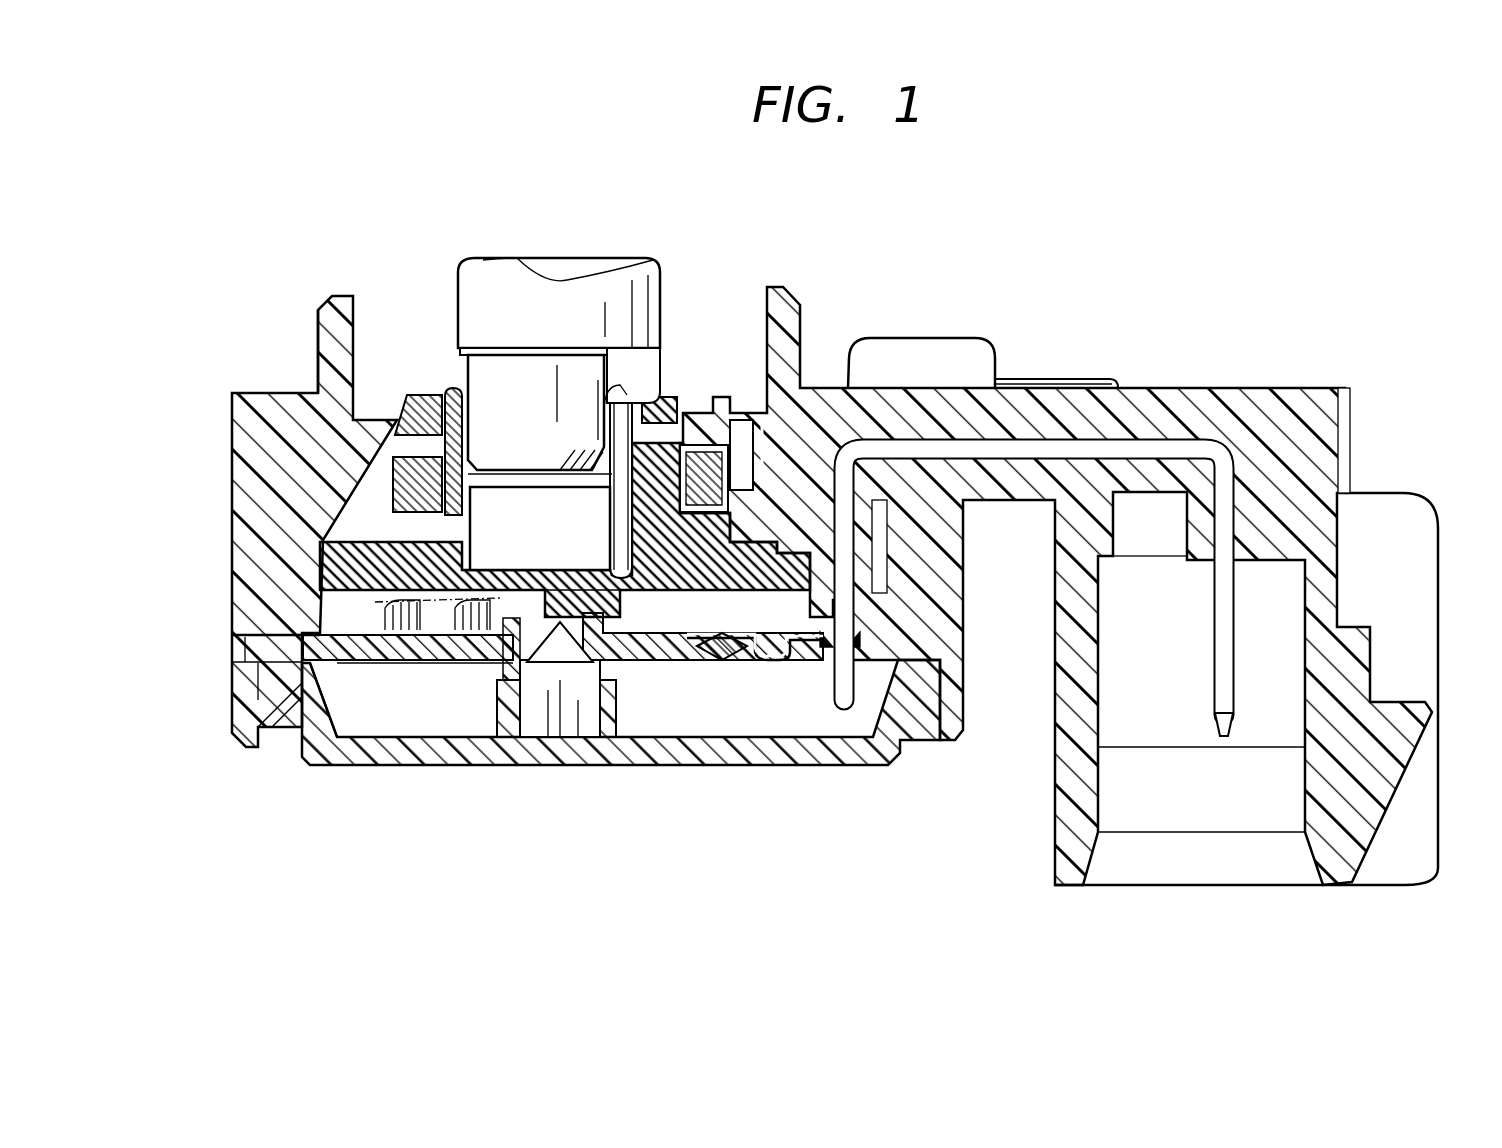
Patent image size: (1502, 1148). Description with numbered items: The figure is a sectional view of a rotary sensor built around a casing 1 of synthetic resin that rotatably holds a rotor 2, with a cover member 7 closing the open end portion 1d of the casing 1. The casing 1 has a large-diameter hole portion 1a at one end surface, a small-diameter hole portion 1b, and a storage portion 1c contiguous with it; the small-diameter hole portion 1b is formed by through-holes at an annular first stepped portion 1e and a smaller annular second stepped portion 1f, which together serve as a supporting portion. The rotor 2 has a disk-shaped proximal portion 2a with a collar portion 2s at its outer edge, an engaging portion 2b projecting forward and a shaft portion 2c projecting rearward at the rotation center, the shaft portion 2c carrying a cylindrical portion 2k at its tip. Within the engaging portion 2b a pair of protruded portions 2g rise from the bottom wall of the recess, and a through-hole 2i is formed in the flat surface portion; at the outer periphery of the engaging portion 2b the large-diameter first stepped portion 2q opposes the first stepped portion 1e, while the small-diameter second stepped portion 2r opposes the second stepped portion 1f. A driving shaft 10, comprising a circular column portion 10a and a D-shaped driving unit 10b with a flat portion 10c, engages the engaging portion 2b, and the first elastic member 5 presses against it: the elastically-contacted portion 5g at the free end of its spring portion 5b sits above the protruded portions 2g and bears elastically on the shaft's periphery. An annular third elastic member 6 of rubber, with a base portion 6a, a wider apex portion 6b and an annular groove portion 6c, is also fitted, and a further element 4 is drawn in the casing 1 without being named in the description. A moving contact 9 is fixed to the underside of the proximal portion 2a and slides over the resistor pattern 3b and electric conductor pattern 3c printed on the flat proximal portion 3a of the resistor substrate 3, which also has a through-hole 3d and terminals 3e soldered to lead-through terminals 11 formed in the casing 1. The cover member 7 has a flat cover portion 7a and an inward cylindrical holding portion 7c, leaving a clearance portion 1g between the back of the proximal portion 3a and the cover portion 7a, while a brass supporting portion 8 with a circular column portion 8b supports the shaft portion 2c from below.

The casing 1 is at (800, 290).
The large-diameter hole portion 1a is at (370, 312).
The small-diameter hole portion 1b is at (417, 413).
The storage portion 1c is at (670, 707).
The open end portion 1d is at (285, 740).
The first stepped portion 1e is at (792, 430).
The second stepped portion 1f is at (697, 420).
The clearance portion 1g is at (705, 717).
The rotor 2 is at (745, 602).
The proximal portion 2a is at (420, 572).
The engaging portion 2b is at (427, 468).
The shaft portion 2c is at (622, 607).
The protruded portions 2g is at (445, 495).
The through-hole 2i is at (653, 433).
The cylindrical portion 2k is at (497, 700).
The first stepped portion 2q is at (745, 556).
The second stepped portion 2r is at (623, 560).
The collar portion 2s is at (800, 630).
The resistor substrate 3 is at (455, 676).
The proximal portion 3a is at (255, 650).
The resistor pattern 3b is at (387, 660).
The electric conductor pattern 3c is at (437, 663).
The through-hole 3d is at (603, 647).
The terminals 3e is at (787, 655).
The lead terminal 4 is at (755, 497).
The first elastic member 5 is at (600, 455).
The spring portion 5b is at (578, 458).
The elastically-contacted portion 5g is at (607, 400).
The third elastic member 6 is at (753, 500).
The base portion 6a is at (712, 560).
The apex portion 6b is at (718, 470).
The annular groove portion 6c is at (633, 510).
The cover member 7 is at (749, 775).
The cover portion 7a is at (467, 723).
The holding portion 7c is at (640, 737).
The supporting portion 8 is at (583, 697).
The circular column portion 8b is at (548, 673).
The moving contact 9 is at (380, 628).
The driving shaft 10 is at (660, 250).
The circular column portion 10a is at (527, 270).
The driving unit 10b is at (480, 372).
The flat portion 10c is at (607, 402).
The lead-through terminals 11 is at (1236, 617).